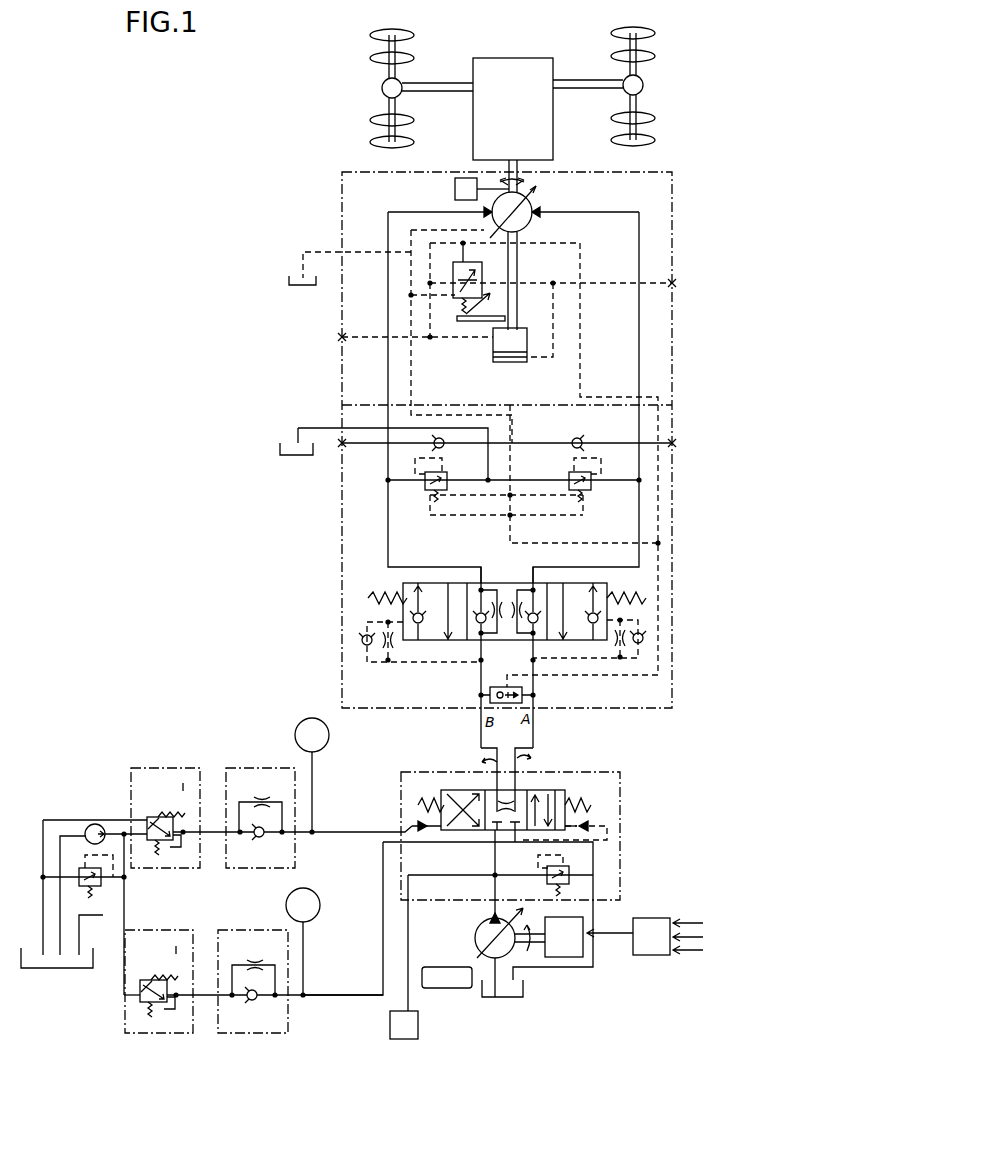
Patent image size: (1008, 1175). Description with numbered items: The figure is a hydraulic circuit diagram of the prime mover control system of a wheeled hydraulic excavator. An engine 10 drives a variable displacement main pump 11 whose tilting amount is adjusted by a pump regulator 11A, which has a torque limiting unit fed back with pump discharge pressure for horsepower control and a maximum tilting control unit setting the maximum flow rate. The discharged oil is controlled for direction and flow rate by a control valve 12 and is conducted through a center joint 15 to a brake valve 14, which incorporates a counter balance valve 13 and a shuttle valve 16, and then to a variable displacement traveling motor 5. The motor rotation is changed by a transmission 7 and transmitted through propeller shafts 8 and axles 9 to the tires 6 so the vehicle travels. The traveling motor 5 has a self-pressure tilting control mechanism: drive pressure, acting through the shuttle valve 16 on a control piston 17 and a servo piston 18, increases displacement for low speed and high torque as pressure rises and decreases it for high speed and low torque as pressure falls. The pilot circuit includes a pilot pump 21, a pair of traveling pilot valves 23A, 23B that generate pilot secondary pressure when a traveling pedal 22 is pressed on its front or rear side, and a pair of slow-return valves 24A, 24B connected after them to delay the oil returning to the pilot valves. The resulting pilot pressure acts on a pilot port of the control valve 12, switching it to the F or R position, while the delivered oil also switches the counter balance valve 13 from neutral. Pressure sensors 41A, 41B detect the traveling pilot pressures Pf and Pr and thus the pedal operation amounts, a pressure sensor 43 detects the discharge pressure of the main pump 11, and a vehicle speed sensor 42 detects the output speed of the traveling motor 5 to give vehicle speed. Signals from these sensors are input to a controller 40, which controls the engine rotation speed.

The traveling motor 5 is at (532, 196).
The tires 6 is at (372, 34).
The transmission 7 is at (553, 138).
The propeller shafts 8 is at (445, 93).
The axles 9 is at (382, 84).
The engine 10 is at (573, 960).
The main pump 11 is at (475, 938).
The pump regulator 11A is at (452, 990).
The control valve 12 is at (622, 826).
The counter balance valve 13 is at (403, 587).
The brake valve 14 is at (342, 607).
The center joint 15 is at (484, 762).
The shuttle valve 16 is at (500, 686).
The control piston 17 is at (485, 270).
The servo piston 18 is at (493, 362).
The pilot pump 21 is at (88, 825).
The traveling pedal 22 is at (160, 815).
The traveling pilot valve 23A is at (137, 1035).
The traveling pilot valve 23B is at (143, 870).
The slow-return valve 24A is at (233, 1035).
The slow-return valve 24B is at (231, 870).
The controller 40 is at (656, 955).
The pressure sensor 41A is at (286, 908).
The pressure sensor 41B is at (298, 722).
The vehicle speed sensor 42 is at (455, 189).
The pressure sensor 43 is at (416, 1040).